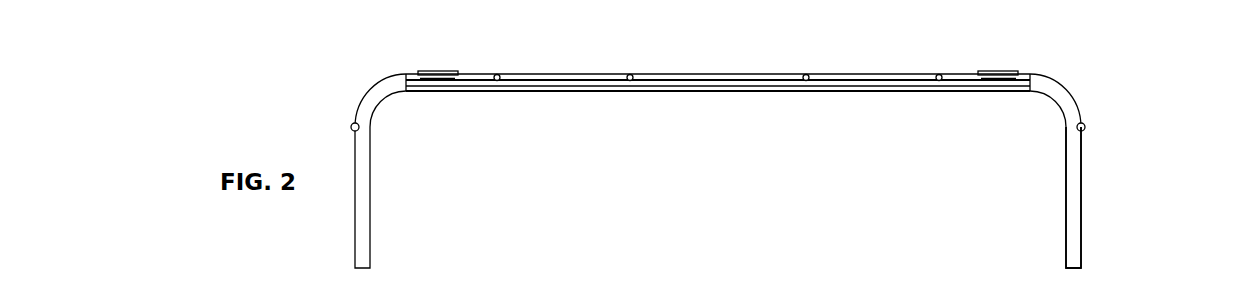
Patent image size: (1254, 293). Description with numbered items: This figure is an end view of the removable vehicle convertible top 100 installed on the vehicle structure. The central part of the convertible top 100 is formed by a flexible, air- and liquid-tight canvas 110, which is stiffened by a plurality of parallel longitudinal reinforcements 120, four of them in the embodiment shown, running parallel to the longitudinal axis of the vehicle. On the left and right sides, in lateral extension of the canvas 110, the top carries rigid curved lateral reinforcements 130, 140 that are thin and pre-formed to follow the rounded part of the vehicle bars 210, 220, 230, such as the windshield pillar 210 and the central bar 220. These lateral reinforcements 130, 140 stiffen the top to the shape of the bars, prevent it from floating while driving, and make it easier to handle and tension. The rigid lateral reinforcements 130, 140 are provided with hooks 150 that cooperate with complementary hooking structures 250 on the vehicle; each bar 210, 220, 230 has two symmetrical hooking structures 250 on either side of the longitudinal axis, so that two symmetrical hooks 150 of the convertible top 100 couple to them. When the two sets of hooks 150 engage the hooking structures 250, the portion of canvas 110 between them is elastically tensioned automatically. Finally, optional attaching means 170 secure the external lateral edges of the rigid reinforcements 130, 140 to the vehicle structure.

The removable vehicle convertible top 100 is at (772, 33).
The flexible canvas 110 is at (701, 73).
The longitudinal reinforcements 120 is at (496, 82).
The rigid curved lateral reinforcement 130 is at (384, 79).
The rigid curved lateral reinforcement 140 is at (1052, 79).
The hooks 150 is at (418, 73).
The attaching means 170 is at (353, 130).
The complementary hooking structures 250 is at (455, 73).
The windshield pillar 210 is at (1070, 197).
The central bar 220 is at (1073, 197).
The bar 230 is at (1073, 197).